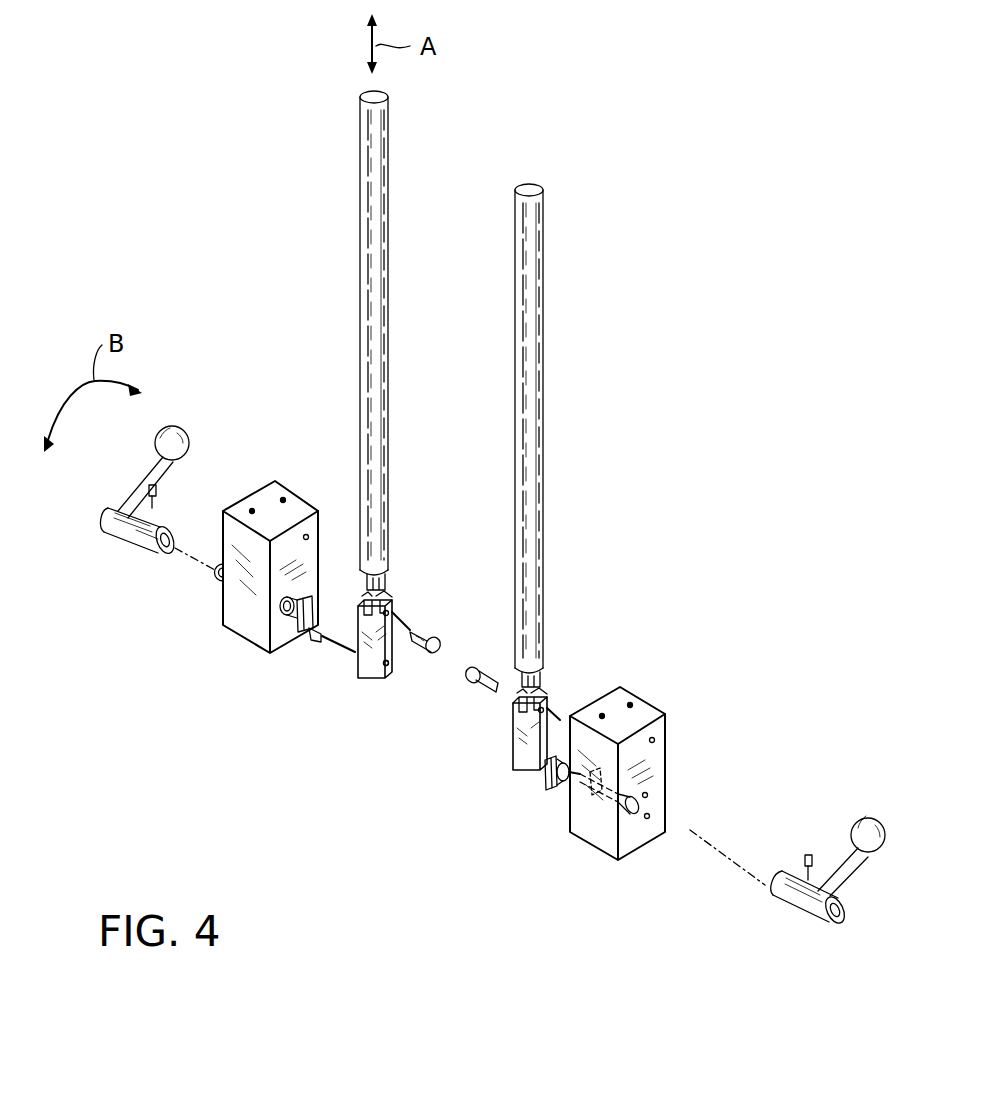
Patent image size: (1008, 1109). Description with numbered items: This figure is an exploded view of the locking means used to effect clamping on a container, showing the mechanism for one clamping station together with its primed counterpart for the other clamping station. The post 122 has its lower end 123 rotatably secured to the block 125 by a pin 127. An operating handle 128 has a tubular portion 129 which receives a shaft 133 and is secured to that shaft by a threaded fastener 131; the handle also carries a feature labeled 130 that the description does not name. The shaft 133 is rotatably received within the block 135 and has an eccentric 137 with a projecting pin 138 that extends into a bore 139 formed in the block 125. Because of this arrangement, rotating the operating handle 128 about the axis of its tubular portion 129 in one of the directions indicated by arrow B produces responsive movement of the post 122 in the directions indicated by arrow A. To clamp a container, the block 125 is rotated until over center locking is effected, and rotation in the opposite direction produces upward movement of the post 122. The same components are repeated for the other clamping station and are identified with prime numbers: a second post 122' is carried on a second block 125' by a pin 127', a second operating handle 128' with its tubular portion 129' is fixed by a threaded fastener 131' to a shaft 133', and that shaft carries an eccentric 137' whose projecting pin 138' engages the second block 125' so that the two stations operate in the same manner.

The post 122 is at (330, 333).
The post 122' is at (582, 435).
The lower end 123 is at (392, 580).
The block 125 is at (345, 662).
The block 125' is at (582, 695).
The pin 127 is at (463, 623).
The pin 127' is at (448, 692).
The operating handle 128 is at (120, 472).
The operating handle 128' is at (870, 880).
The tubular portion 129 is at (138, 552).
The tubular portion 129' is at (765, 913).
The hub bore 130 is at (170, 558).
The threaded fastener 131 is at (198, 481).
The threaded fastener 131' is at (838, 823).
The shaft 133 is at (183, 609).
The shaft 133' is at (672, 786).
The block 135 is at (246, 642).
The eccentric 137 is at (315, 537).
The eccentric 137' is at (531, 819).
The projecting pin 138 is at (285, 649).
The projecting pin 138' is at (497, 800).
The bore 139 is at (385, 668).